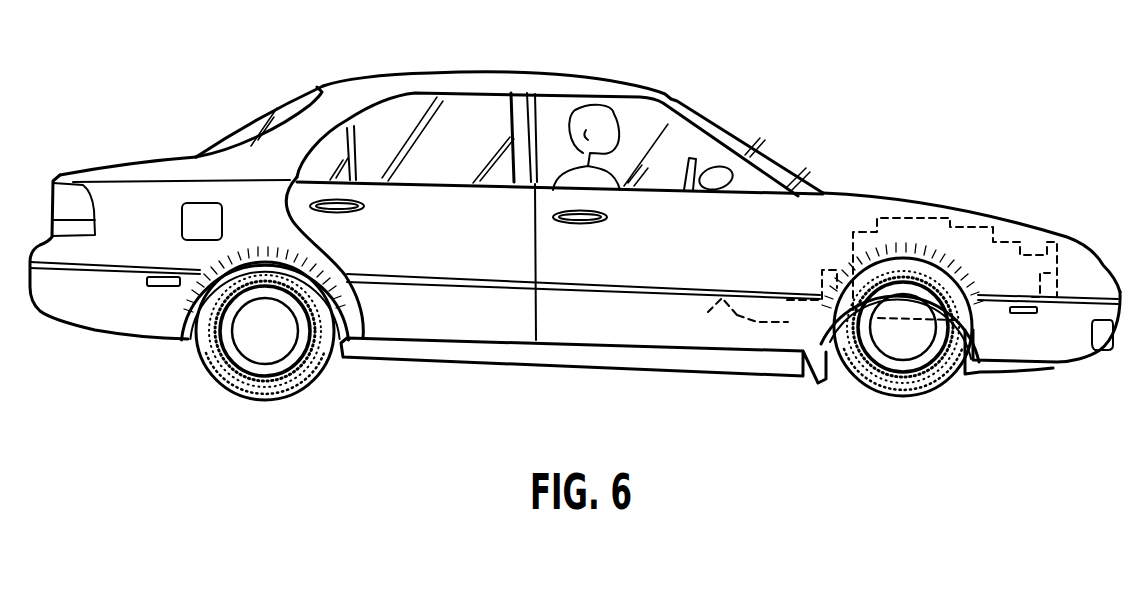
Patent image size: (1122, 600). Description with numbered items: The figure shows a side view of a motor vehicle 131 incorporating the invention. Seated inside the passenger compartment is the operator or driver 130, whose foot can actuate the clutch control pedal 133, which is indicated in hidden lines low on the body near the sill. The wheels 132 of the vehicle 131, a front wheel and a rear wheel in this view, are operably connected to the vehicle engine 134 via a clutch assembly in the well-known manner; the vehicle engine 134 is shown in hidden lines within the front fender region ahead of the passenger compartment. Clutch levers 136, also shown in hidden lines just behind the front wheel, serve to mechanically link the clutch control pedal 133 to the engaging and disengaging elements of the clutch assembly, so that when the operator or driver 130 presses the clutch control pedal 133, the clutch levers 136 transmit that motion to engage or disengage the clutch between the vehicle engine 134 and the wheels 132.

The operator or driver 130 is at (605, 100).
The motor vehicle 131 is at (167, 157).
The wheels 132 is at (305, 385).
The clutch control pedal 133 is at (737, 315).
The vehicle engine 134 is at (945, 210).
The clutch levers 136 is at (795, 302).